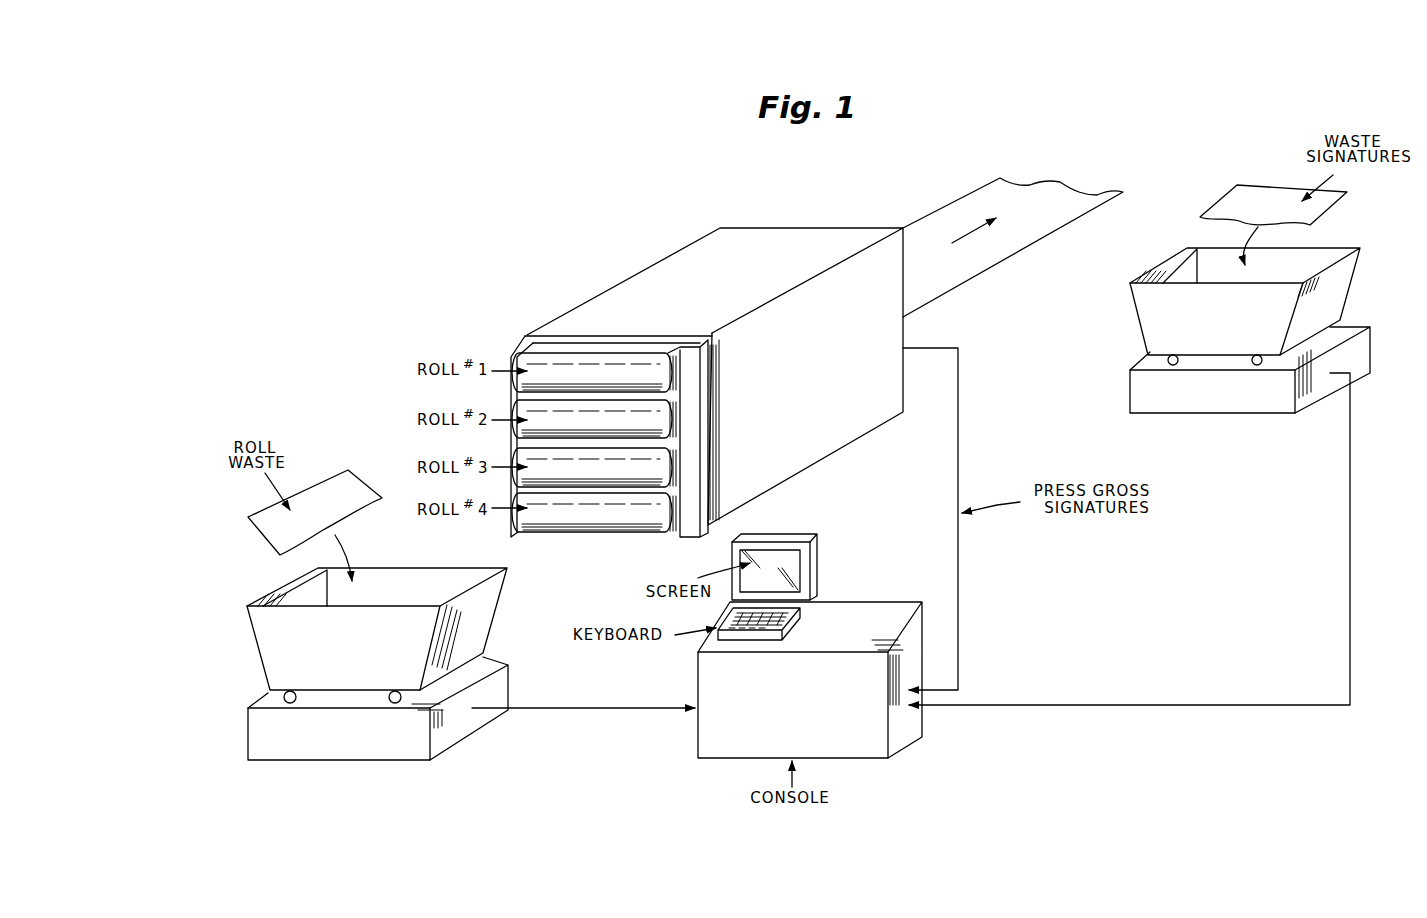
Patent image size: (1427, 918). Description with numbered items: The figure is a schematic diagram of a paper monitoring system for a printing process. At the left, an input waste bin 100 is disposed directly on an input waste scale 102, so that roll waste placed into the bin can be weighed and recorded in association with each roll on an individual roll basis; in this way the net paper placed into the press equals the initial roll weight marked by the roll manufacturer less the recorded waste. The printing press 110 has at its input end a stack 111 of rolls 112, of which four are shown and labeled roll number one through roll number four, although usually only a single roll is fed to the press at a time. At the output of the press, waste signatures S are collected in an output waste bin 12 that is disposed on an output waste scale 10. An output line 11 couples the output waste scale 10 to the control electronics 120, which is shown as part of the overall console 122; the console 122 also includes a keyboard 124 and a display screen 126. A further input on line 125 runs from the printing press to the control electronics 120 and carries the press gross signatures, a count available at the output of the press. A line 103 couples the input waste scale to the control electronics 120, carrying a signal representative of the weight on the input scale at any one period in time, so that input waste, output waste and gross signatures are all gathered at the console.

The output waste scale 10 is at (1264, 407).
The output line 11 is at (1222, 703).
The output waste bin 12 is at (1337, 282).
The input waste bin 100 is at (257, 643).
The input waste scale 102 is at (283, 760).
The line 103 is at (585, 710).
The printing press 110 is at (584, 296).
The stack 111 is at (591, 535).
The rolls 112 is at (563, 410).
The control electronics 120 is at (812, 678).
The console 122 is at (897, 600).
The keyboard 124 is at (723, 620).
The line 125 is at (960, 404).
The display screen 126 is at (818, 562).
The waste signature S is at (1203, 208).